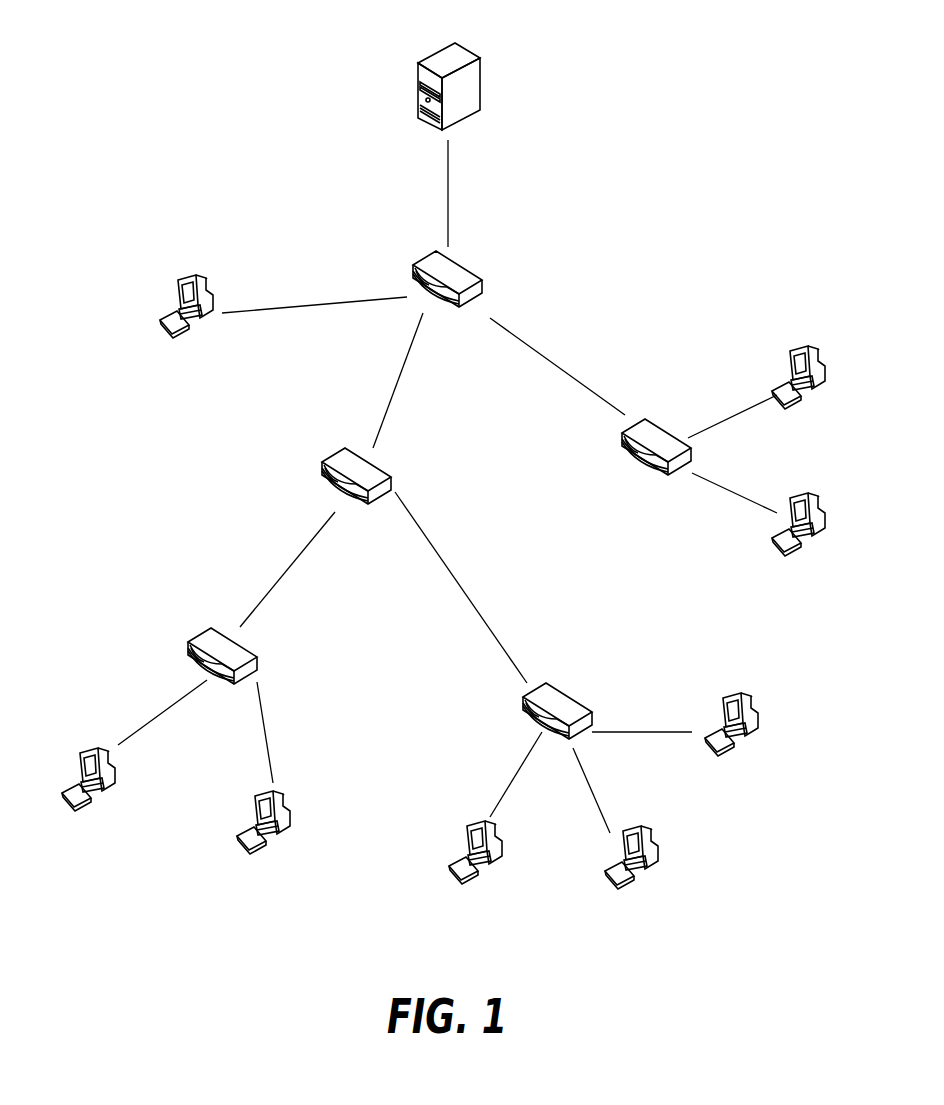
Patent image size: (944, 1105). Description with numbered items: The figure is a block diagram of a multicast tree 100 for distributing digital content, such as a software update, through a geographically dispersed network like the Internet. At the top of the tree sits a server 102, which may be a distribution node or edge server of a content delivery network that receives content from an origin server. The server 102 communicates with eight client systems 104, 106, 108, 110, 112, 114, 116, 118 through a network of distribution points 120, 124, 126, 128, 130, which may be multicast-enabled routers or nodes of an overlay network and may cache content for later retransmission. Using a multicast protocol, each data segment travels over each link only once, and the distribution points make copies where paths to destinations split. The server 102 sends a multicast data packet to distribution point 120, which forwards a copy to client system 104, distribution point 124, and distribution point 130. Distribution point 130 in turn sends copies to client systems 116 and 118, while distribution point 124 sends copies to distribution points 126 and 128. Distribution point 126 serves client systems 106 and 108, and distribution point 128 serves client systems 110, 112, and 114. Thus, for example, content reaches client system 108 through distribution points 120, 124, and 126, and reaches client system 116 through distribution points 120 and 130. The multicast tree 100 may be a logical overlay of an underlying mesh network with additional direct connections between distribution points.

The multicast tree 100 is at (696, 142).
The server 102 is at (473, 55).
The client system 104 is at (205, 280).
The client system 106 is at (85, 752).
The client system 108 is at (275, 800).
The client system 110 is at (493, 827).
The client system 112 is at (647, 830).
The client system 114 is at (752, 682).
The client system 116 is at (802, 495).
The client system 118 is at (795, 348).
The distribution point 120 is at (475, 268).
The distribution point 124 is at (373, 464).
The distribution point 126 is at (253, 648).
The distribution point 128 is at (573, 692).
The distribution point 130 is at (660, 420).